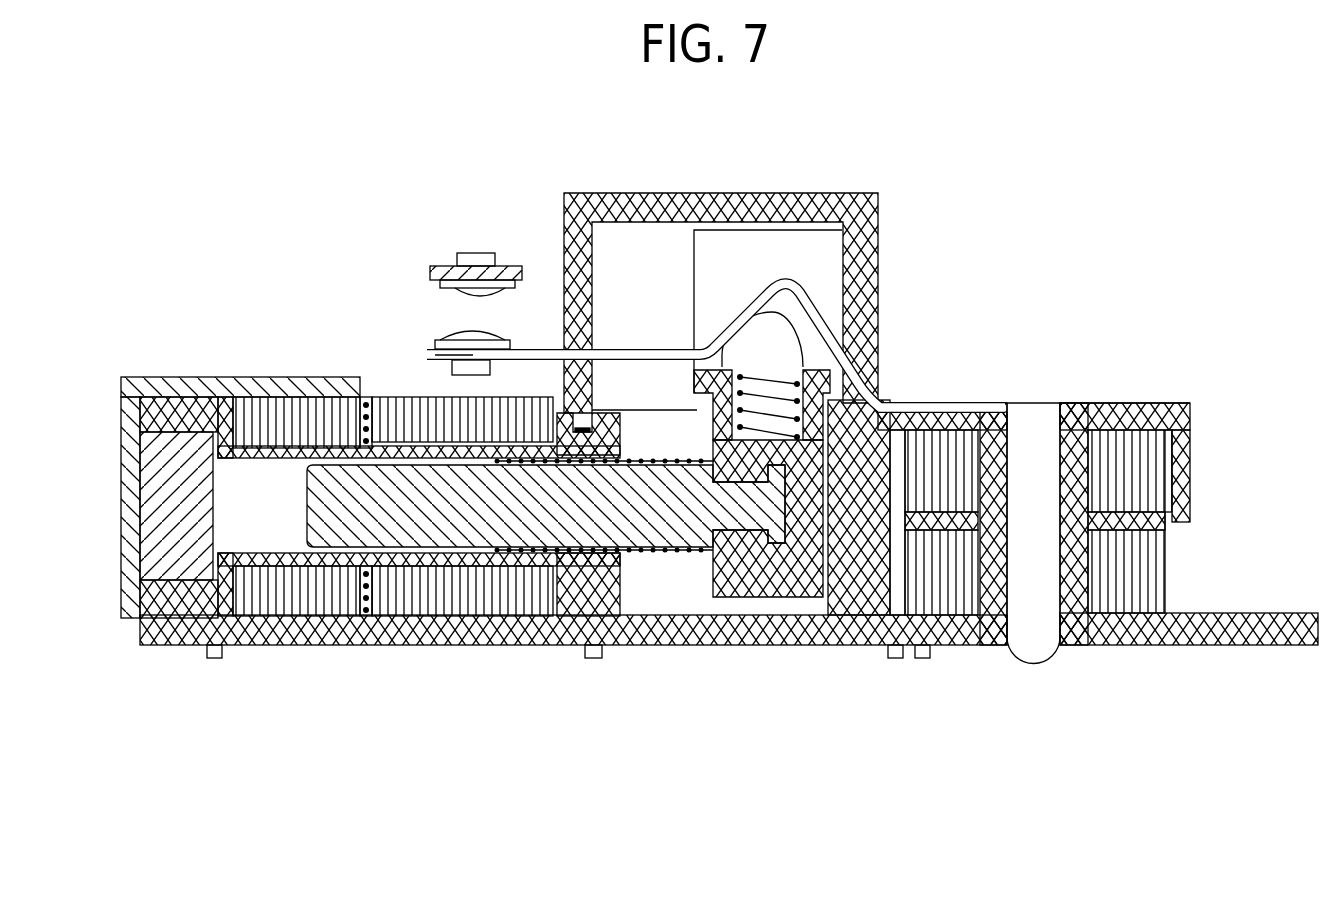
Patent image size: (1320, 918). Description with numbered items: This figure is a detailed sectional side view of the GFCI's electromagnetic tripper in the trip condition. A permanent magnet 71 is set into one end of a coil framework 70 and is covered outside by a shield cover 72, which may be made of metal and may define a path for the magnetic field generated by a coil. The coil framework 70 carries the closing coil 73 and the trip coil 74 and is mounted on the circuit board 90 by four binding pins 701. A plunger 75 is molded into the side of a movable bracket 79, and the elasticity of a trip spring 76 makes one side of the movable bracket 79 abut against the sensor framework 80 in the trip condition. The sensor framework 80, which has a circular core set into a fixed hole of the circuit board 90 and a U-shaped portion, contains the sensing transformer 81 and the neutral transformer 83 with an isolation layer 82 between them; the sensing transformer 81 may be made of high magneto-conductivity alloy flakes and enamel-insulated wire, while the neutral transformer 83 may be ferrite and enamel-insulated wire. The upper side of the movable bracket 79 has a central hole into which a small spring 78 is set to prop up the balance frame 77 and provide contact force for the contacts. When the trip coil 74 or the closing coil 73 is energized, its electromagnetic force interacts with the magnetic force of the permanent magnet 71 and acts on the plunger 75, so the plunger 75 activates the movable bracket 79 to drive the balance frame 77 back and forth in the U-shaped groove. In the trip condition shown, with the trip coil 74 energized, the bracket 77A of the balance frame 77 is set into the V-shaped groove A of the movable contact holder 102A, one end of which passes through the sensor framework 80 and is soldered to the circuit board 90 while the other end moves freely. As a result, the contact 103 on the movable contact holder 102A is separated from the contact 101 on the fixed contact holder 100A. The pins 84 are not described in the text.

The coil framework 70 is at (210, 390).
The permanent magnet 71 is at (150, 500).
The shield cover 72 is at (147, 387).
The closing coil 73 is at (303, 398).
The trip coil 74 is at (483, 605).
The plunger 75 is at (705, 548).
The trip spring 76 is at (652, 553).
The balance frame 77 is at (828, 262).
The bracket of the balance frame 77A is at (745, 345).
The small spring 78 is at (845, 402).
The movable bracket 79 is at (805, 572).
The sensor framework 80 is at (865, 293).
The sensing transformer 81 is at (1143, 565).
The isolation layer 82 is at (1162, 525).
The neutral transformer 83 is at (1145, 462).
The terminals 84 is at (923, 660).
The circuit board 90 is at (160, 635).
The fixed contact holder 100A is at (452, 258).
The contacts of the fixed contact holders 101 is at (445, 296).
The movable contact holder 102A is at (432, 355).
The contacts of the movable contact holders 103 is at (450, 333).
The binding pins 701 is at (215, 660).
The V-shaped groove A is at (780, 312).